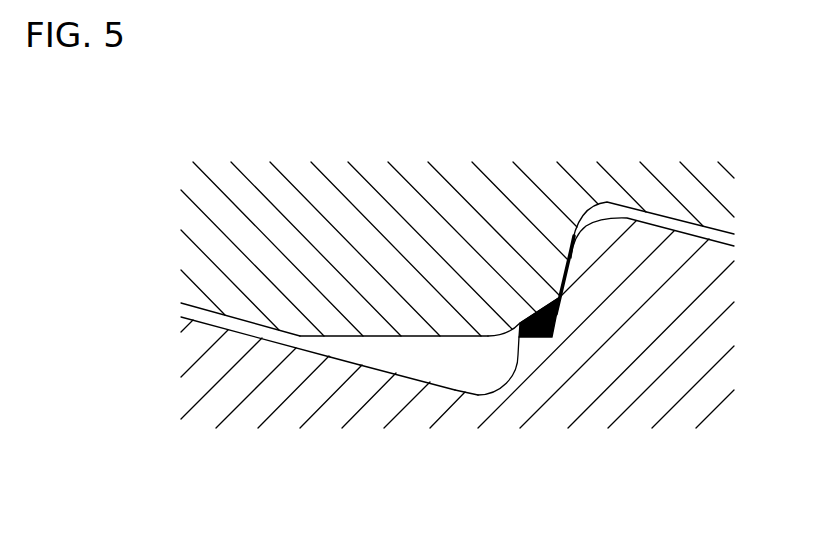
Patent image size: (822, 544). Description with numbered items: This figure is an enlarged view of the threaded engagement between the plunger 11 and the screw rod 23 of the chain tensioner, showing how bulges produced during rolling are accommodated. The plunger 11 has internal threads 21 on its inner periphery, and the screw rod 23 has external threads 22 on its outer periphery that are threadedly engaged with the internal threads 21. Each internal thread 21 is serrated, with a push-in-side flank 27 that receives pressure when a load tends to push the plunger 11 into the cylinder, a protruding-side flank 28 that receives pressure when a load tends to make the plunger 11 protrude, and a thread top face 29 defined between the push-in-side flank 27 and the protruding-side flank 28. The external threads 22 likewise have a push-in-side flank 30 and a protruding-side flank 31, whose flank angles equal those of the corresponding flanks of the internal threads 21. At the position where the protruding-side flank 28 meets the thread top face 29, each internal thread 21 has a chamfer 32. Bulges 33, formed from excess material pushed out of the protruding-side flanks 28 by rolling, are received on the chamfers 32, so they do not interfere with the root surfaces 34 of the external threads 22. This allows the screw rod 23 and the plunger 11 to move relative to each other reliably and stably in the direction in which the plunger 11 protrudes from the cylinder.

The plunger 11 is at (187, 227).
The internal thread 21 is at (358, 318).
The external thread 22 is at (632, 287).
The screw rod 23 is at (197, 370).
The push-in-side flank 27 is at (248, 332).
The protruding-side flank 28 is at (598, 237).
The thread top face 29 is at (430, 344).
The push-in-side flank 30 is at (350, 360).
The protruding-side flank 31 is at (550, 298).
The chamfer 32 is at (552, 330).
The bulge 33 is at (517, 333).
The root surface 34 is at (467, 385).